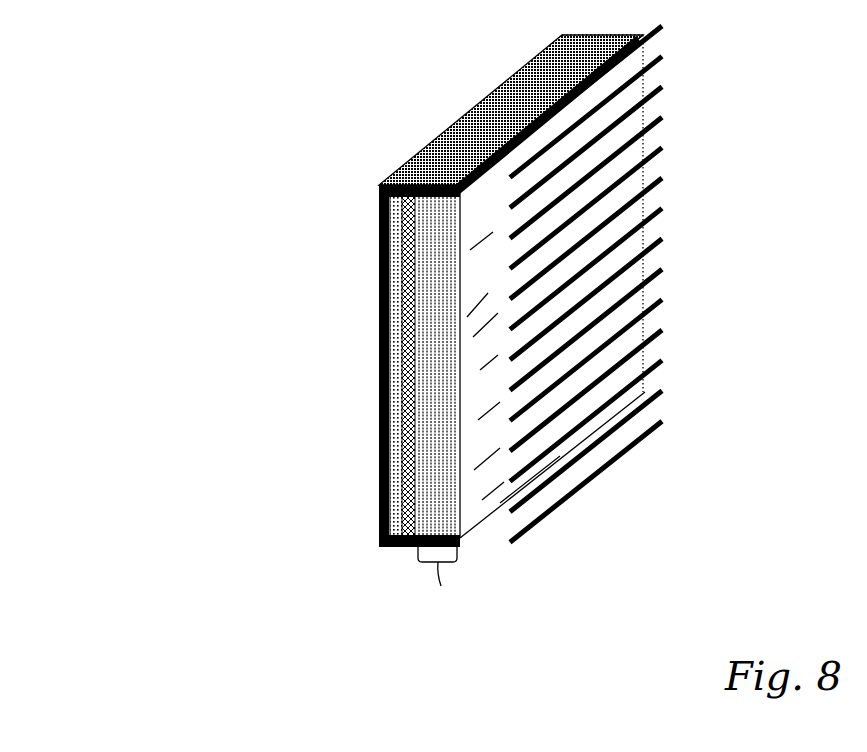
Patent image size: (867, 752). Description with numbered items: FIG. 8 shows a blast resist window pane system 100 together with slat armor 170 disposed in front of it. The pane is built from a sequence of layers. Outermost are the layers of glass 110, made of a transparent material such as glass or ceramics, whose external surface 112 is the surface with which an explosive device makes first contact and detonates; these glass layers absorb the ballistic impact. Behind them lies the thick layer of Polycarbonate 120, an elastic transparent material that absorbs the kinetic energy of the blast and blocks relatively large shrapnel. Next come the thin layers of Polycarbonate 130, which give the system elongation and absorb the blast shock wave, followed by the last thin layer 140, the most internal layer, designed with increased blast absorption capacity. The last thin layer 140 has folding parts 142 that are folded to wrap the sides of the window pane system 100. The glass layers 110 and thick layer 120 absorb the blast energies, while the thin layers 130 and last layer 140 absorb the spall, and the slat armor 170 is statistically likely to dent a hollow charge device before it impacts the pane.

The blast resist window pane system 100 is at (507, 334).
The layers of glass 110 is at (446, 591).
The external surface 112 is at (475, 205).
The thick layer of Polycarbonate 120 is at (405, 548).
The thin layers of Polycarbonate 130 is at (377, 533).
The last thin layer 140 is at (377, 412).
The folding parts 142 is at (437, 165).
The slat armor 170 is at (663, 348).